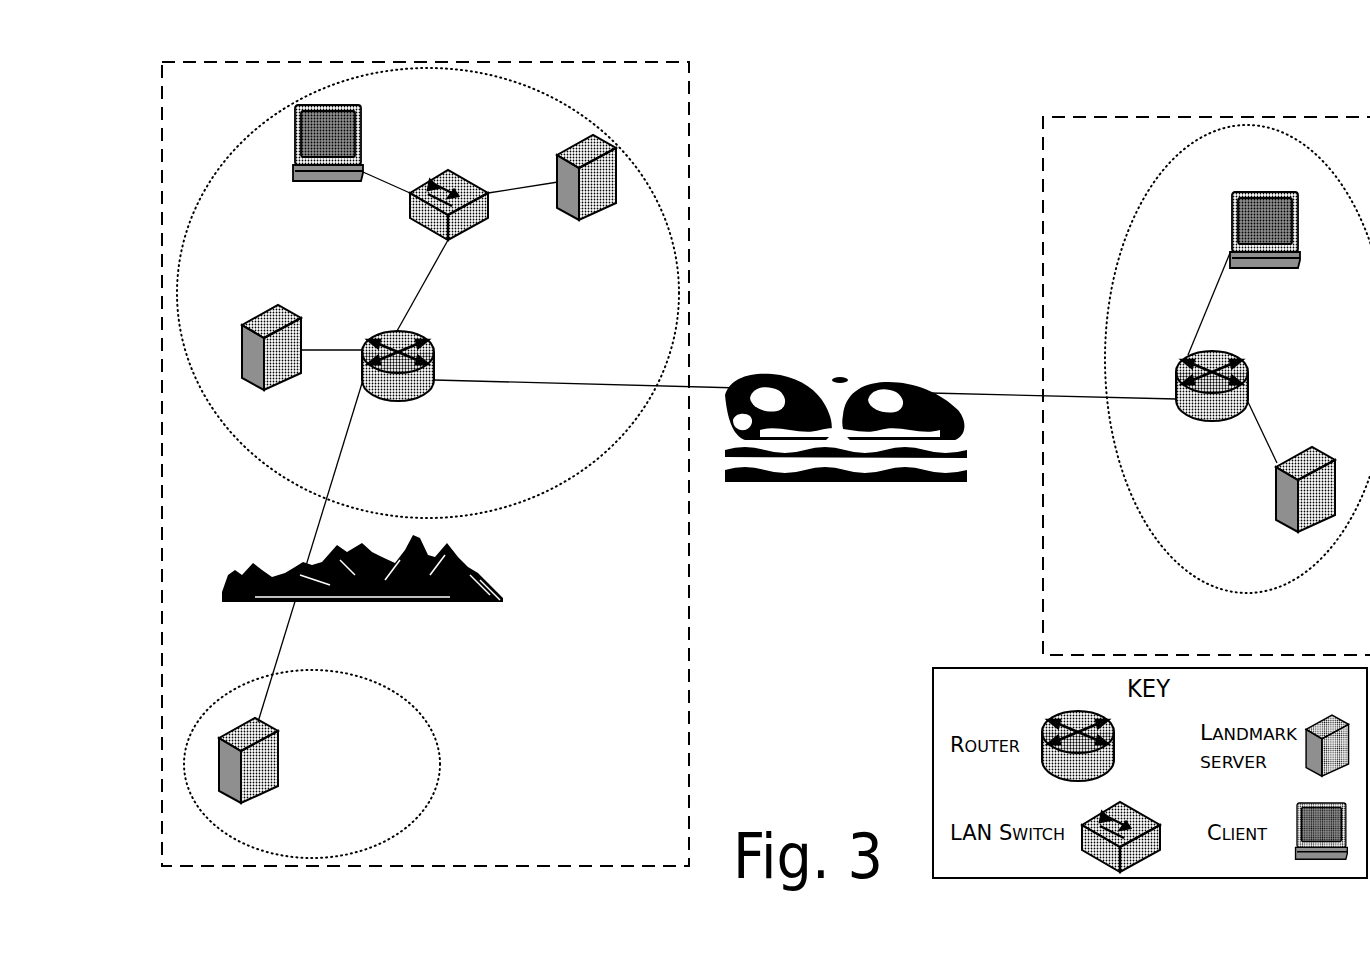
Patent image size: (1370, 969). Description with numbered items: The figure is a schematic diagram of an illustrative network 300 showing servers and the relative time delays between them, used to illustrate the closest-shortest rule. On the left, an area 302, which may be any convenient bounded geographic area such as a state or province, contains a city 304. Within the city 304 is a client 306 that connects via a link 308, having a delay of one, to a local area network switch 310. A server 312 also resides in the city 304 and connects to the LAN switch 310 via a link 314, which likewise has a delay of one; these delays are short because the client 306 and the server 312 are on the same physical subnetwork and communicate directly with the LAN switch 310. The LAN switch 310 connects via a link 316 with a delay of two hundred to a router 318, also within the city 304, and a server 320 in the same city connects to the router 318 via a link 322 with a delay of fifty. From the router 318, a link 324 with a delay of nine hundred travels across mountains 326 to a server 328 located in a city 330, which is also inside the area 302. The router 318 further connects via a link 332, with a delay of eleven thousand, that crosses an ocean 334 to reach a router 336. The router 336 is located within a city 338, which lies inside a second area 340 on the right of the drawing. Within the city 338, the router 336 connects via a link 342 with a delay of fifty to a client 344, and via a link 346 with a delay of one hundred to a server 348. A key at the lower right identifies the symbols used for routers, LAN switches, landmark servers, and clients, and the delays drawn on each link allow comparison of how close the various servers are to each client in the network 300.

The network 300 is at (1301, 64).
The area 302 is at (447, 858).
The city 304 is at (451, 123).
The client 306 is at (342, 203).
The link 308 is at (413, 146).
The local area network (LAN) switch 310 is at (469, 271).
The server 312 is at (607, 251).
The link 314 is at (537, 153).
The link 316 is at (482, 303).
The router 318 is at (416, 433).
The server 320 is at (289, 421).
The link 322 is at (358, 308).
The link 324 is at (297, 508).
The mountains 326 is at (362, 585).
The server 328 is at (267, 835).
The city 330 is at (330, 725).
The link 332 is at (1053, 370).
The ocean 334 is at (846, 443).
The router 336 is at (1231, 453).
The city 338 is at (1271, 183).
The area 340 is at (1236, 649).
The link 342 is at (1187, 281).
The client 344 is at (1279, 291).
The link 346 is at (1333, 416).
The server 348 is at (1323, 563).